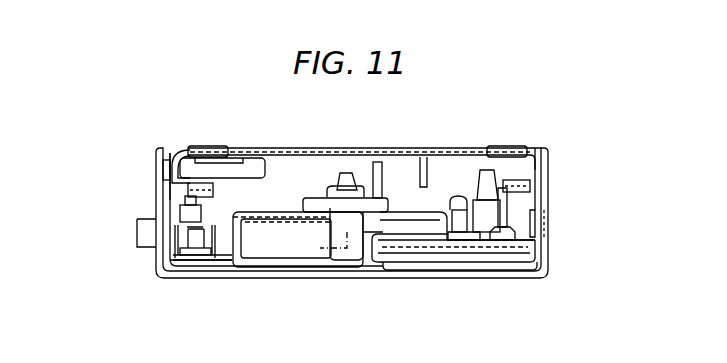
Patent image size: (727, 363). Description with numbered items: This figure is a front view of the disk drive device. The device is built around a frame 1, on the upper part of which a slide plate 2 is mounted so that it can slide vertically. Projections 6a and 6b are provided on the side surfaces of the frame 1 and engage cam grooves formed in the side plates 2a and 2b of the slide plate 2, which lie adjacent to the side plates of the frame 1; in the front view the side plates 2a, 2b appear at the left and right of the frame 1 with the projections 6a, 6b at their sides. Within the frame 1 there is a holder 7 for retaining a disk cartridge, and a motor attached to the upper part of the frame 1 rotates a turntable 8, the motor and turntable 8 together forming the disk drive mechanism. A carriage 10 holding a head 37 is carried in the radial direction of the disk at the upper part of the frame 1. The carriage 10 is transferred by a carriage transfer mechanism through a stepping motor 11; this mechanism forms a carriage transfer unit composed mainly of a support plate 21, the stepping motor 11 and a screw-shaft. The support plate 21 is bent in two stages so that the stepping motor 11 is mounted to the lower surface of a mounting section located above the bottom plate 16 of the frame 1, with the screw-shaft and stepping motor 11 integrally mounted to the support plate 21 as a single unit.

The frame 1 is at (548, 188).
The slide plate 2 is at (163, 266).
The side plate 2a is at (164, 150).
The side plate 2b is at (532, 150).
The projection 6a is at (160, 170).
The projection 6b is at (548, 162).
The holder 7 is at (250, 157).
The turntable 8 is at (303, 204).
The carriage 10 is at (268, 240).
The stepping motor 11 is at (478, 265).
The bottom plate 16 is at (232, 280).
The support plate 21 is at (315, 268).
The head 37 is at (455, 199).